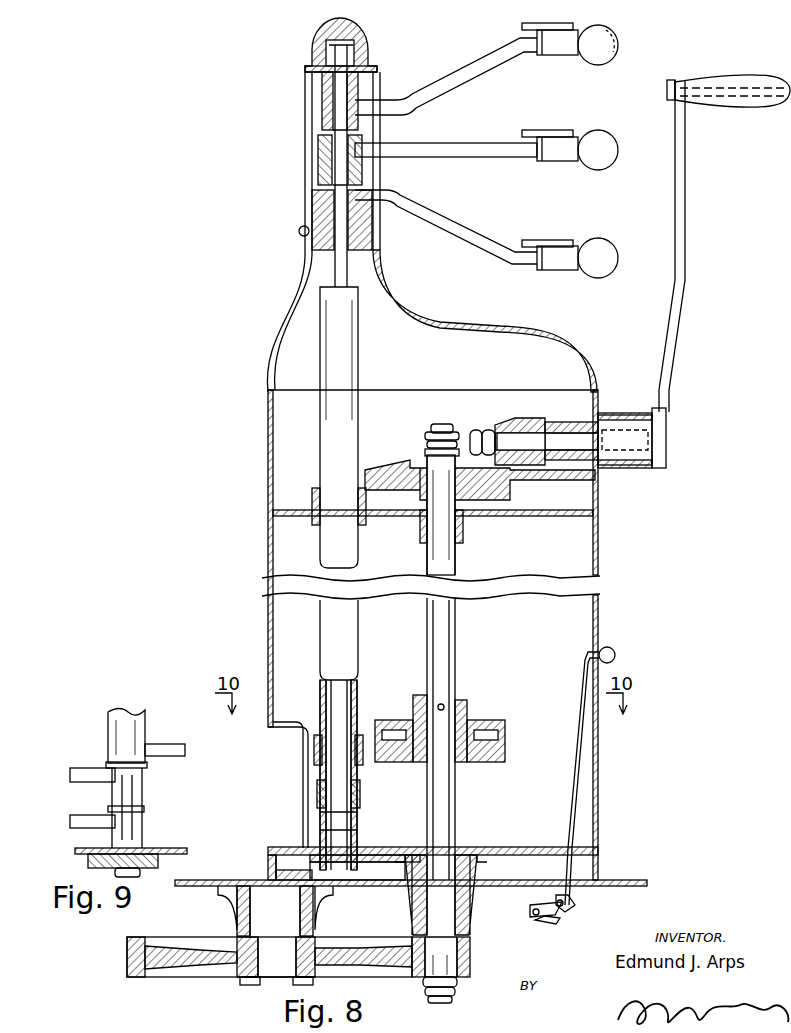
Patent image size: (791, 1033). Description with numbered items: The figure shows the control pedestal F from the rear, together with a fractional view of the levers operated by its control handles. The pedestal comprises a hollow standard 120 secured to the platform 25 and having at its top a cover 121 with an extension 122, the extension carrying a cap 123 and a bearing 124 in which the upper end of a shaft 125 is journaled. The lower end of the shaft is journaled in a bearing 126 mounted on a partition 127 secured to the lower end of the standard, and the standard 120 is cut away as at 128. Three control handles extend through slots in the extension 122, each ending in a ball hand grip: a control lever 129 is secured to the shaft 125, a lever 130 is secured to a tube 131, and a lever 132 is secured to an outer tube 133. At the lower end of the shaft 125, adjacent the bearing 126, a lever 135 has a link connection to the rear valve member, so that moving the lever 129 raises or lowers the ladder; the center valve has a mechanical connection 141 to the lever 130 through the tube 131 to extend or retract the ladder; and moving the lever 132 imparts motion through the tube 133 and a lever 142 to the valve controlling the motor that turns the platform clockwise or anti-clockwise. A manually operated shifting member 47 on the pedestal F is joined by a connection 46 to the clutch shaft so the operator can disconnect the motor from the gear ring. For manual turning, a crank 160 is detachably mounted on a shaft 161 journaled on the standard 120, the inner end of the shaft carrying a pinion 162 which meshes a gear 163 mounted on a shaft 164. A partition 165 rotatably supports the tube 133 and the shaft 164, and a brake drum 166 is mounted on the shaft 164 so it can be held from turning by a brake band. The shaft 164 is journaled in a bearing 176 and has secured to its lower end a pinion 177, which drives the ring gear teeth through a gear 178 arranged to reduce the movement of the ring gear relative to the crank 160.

In FIG. 8, the shaft 125 is at (322, 38).
In FIG. 8, the cap 123 is at (308, 55).
In FIG. 8, the extension 122 is at (305, 92).
In FIG. 8, the bearing 124 is at (356, 80).
In FIG. 8, the tube 131 is at (335, 150).
In FIG. 8, the control lever 129 is at (455, 72).
In FIG. 8, the lever 130 is at (440, 143).
In FIG. 8, the lever 132 is at (462, 222).
In FIG. 8, the cover 121 is at (474, 328).
In FIG. 8, the hollow standard 120 is at (600, 626).
In FIG. 8, the cut away 128 is at (283, 733).
In FIG. 8, the outer tube 133 is at (360, 365).
In FIG. 8, the partition 165 is at (390, 518).
In FIG. 8, the gear 163 is at (484, 478).
In FIG. 8, the shaft 164 is at (457, 558).
In FIG. 8, the shaft 161 is at (568, 440).
In FIG. 8, the pinion 162 is at (510, 418).
In FIG. 8, the crank 160 is at (686, 346).
In FIG. 8, the control pedestal F is at (600, 556).
In FIG. 8, the manually operated shifting member 47 is at (614, 650).
In FIG. 8, the connection 46 is at (540, 915).
In FIG. 8, the brake drum 166 is at (478, 725).
In FIG. 8, the lever 142 is at (362, 765).
In FIG. 9, the lever 142 is at (175, 758).
In FIG. 8, the mechanical connection 141 is at (317, 792).
In FIG. 9, the mechanical connection 141 is at (92, 783).
In FIG. 8, the lever 135 is at (352, 828).
In FIG. 9, the lever 135 is at (80, 828).
In FIG. 8, the partition 127 is at (505, 847).
In FIG. 8, the bearing 126 is at (340, 877).
In FIG. 9, the bearing 126 is at (160, 870).
In FIG. 8, the platform 25 is at (608, 882).
In FIG. 8, the bearing 176 is at (468, 906).
In FIG. 8, the pinion 177 is at (470, 955).
In FIG. 8, the gear 178 is at (130, 985).